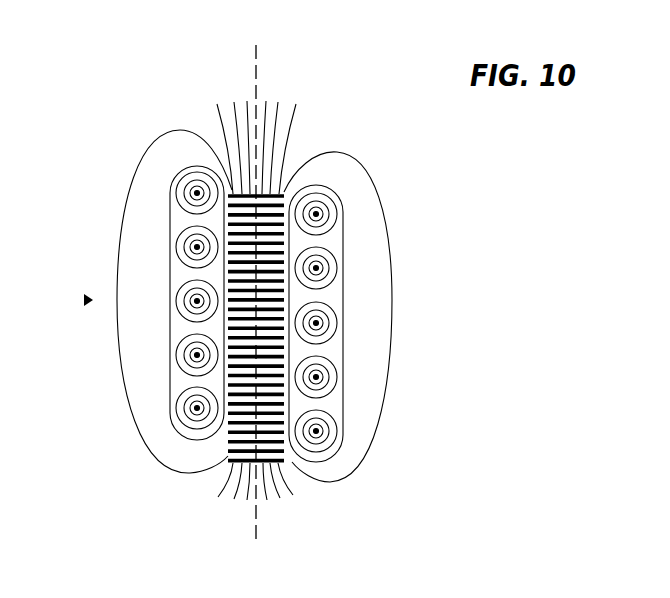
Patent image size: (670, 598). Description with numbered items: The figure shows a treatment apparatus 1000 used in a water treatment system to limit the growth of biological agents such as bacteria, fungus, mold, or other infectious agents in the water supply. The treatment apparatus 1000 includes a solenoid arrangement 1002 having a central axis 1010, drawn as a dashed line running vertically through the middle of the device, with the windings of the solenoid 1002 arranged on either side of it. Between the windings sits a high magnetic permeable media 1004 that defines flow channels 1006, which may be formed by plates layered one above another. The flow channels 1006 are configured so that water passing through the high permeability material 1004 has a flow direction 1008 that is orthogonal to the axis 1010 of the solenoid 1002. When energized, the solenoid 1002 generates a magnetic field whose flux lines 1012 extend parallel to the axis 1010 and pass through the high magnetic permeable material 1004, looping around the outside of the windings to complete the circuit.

The treatment apparatus 1000 is at (211, 40).
The solenoid arrangement 1002 is at (313, 326).
The high magnetic permeable media 1004 is at (277, 195).
The flow channels 1006 is at (238, 197).
The flow direction 1008 is at (245, 278).
The central axis 1010 is at (255, 517).
The flux lines 1012 is at (372, 192).